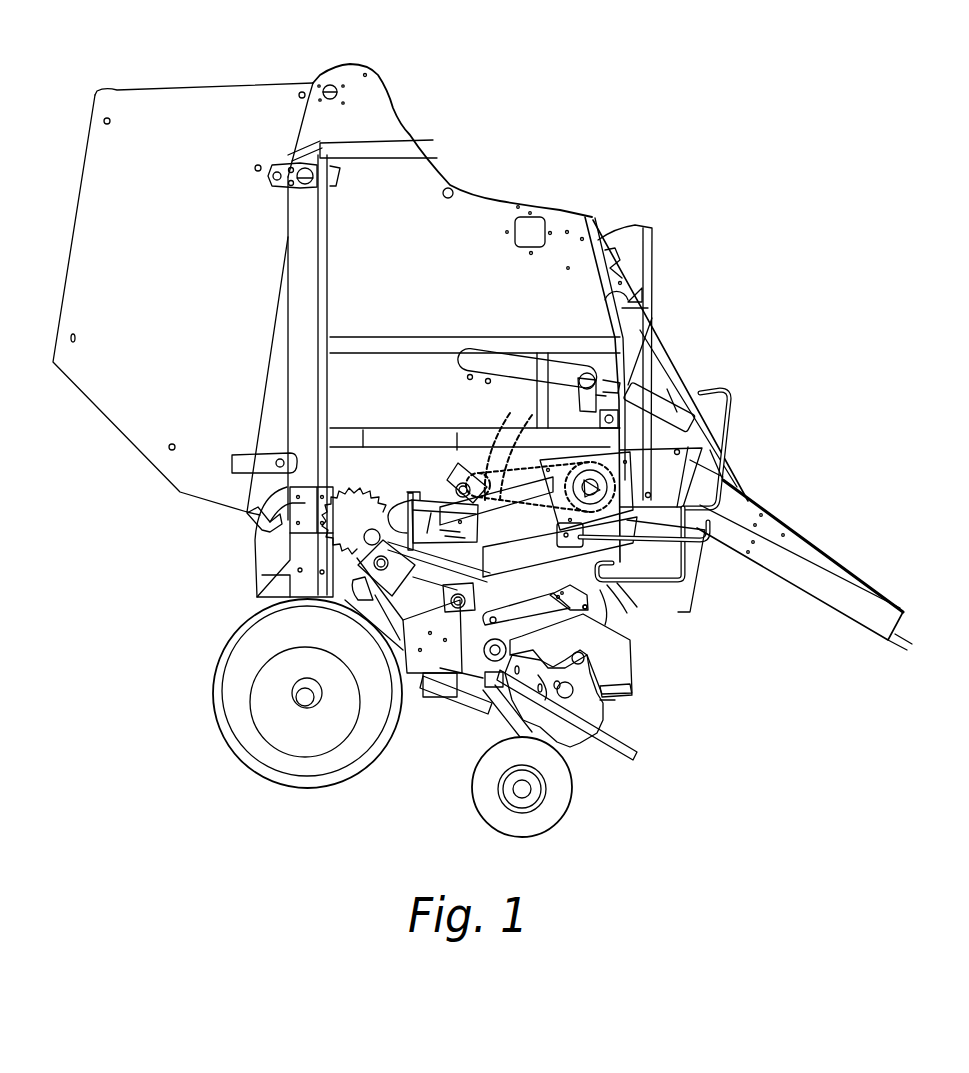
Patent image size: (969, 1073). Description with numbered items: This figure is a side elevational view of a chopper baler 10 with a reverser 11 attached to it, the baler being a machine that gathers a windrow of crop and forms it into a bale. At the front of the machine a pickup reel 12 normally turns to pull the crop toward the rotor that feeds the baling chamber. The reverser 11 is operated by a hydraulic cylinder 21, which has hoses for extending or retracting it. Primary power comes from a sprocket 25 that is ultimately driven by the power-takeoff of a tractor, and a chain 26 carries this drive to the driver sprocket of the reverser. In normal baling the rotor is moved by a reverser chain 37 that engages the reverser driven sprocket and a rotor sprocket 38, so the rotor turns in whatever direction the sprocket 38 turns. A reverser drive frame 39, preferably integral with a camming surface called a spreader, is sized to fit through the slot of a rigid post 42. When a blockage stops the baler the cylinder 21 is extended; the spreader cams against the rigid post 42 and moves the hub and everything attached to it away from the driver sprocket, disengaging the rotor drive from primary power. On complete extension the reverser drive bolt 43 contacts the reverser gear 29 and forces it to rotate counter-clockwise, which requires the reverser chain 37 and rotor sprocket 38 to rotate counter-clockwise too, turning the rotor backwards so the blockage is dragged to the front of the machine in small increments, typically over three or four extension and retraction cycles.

The baler 10 is at (327, 48).
The reverser 11 is at (352, 501).
The pickup reel 12 is at (614, 712).
The hydraulic cylinder 21 is at (504, 572).
The sprocket 25 is at (622, 463).
The chain 26 is at (557, 460).
The reverser gear 29 is at (360, 537).
The chain 37 is at (420, 612).
The reverser sprocket 38 is at (457, 617).
The reverser drive frame 39 is at (445, 500).
The rigid post 42 is at (397, 508).
The reverser drive bolt 43 is at (440, 572).